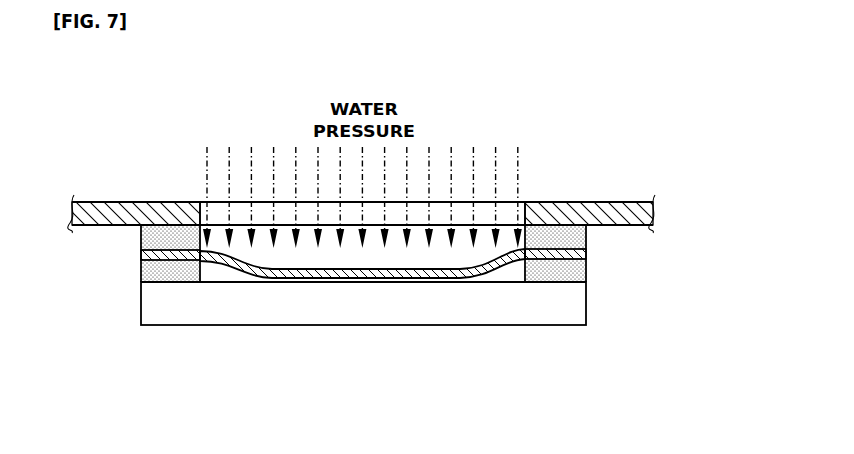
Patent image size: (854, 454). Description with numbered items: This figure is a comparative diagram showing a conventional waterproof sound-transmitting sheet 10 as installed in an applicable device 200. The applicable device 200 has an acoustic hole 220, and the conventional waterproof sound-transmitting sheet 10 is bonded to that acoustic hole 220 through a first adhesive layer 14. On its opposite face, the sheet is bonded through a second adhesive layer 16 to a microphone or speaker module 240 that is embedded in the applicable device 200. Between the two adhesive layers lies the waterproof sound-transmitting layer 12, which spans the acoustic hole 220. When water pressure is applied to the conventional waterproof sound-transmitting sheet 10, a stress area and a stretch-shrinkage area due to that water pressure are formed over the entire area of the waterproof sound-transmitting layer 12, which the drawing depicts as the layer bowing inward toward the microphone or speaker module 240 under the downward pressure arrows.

The applicable device 200 is at (577, 202).
The acoustic hole 220 is at (218, 203).
The conventional waterproof sound-transmitting sheet 10 is at (700, 270).
The first adhesive layer 14 is at (572, 237).
The waterproof sound-transmitting layer 12 is at (580, 256).
The second adhesive layer 16 is at (578, 276).
The microphone or speaker module 240 is at (362, 326).